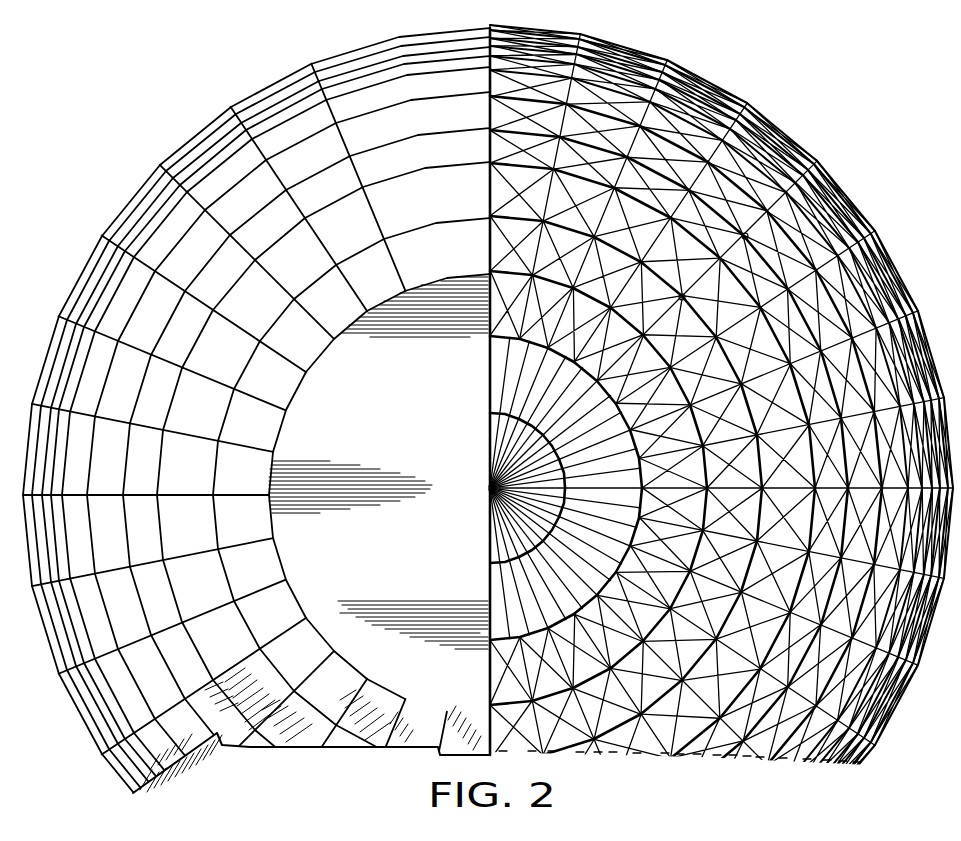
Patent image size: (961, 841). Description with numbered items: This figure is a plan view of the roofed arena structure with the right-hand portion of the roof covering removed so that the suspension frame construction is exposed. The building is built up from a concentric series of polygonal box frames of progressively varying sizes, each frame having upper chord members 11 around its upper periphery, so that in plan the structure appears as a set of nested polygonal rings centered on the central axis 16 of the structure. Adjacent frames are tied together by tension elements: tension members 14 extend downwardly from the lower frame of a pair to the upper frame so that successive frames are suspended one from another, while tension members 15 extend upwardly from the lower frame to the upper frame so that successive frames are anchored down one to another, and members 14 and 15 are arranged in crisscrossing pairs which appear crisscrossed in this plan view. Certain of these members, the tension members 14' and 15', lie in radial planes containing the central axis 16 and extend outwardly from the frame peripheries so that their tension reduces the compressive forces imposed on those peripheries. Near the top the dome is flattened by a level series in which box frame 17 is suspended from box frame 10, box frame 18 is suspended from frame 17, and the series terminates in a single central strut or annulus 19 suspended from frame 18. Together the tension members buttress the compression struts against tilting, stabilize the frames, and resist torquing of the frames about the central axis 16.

The polygonal box frame 10 is at (696, 428).
The upper chord members 11 is at (644, 315).
The tension members 14 is at (626, 488).
The tension members 15 is at (676, 306).
The tension members 14' is at (669, 485).
The tension members 15' is at (741, 248).
The central axis 16 is at (487, 490).
The box frame 17 is at (600, 386).
The box frame 18 is at (500, 426).
The central strut or annulus 19 is at (503, 496).